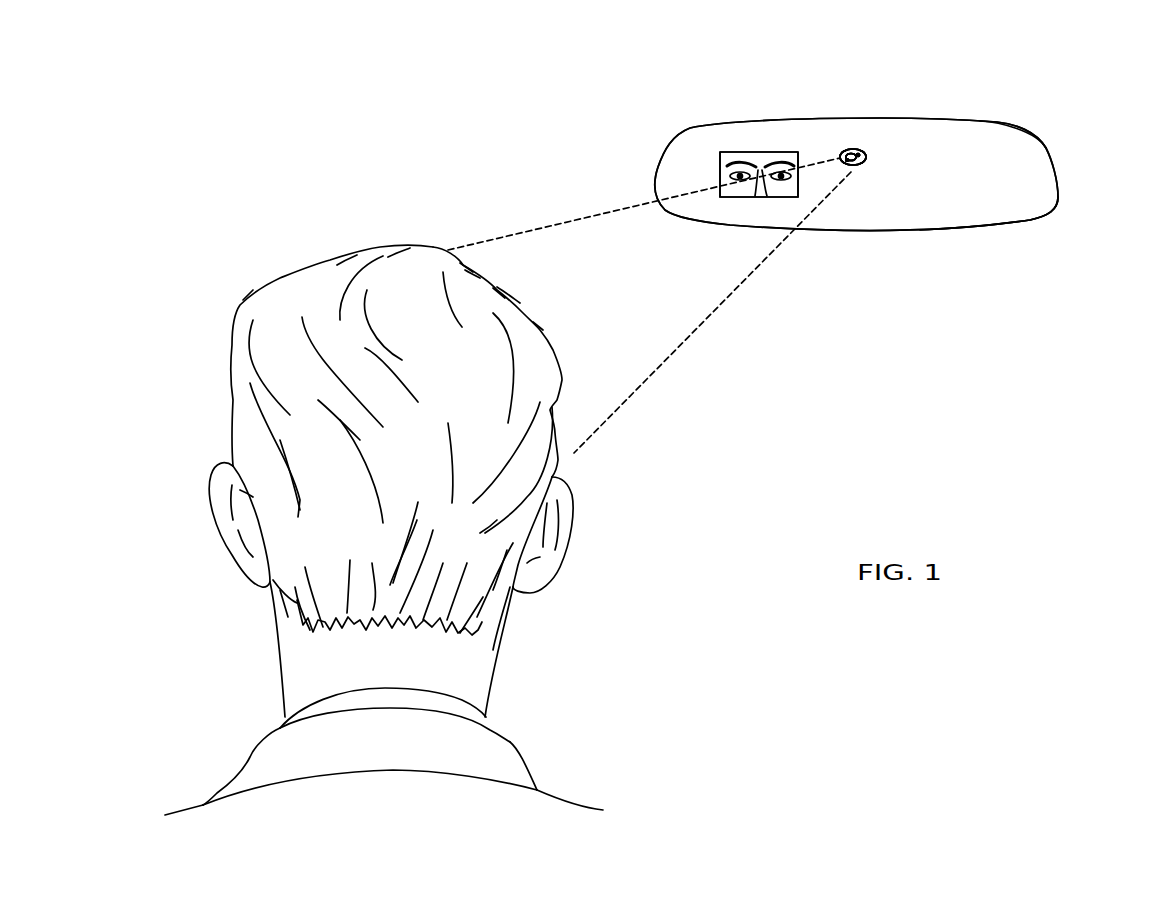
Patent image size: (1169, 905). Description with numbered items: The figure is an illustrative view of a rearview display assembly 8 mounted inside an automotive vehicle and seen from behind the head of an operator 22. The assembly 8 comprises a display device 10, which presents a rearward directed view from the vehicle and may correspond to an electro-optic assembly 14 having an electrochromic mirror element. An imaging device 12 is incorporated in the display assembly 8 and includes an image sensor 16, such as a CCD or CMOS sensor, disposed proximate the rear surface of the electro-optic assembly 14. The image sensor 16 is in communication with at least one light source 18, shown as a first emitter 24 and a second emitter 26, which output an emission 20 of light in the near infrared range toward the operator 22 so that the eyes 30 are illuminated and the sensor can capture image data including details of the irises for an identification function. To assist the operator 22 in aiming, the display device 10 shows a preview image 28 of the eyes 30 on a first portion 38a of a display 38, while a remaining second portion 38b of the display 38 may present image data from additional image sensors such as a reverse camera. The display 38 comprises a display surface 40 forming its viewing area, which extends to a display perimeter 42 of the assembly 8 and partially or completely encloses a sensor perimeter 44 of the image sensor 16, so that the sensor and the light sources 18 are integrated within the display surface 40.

The rearview display assembly 8 is at (866, 153).
The display device 10 is at (856, 143).
The electro-optic assembly 14 is at (773, 128).
The imaging device 12 is at (873, 128).
The image sensor 16 is at (866, 158).
The light source 18 is at (872, 213).
The emission 20 is at (536, 232).
The operator 22 is at (323, 268).
The first emitter 24 is at (839, 165).
The second emitter 26 is at (851, 165).
The preview image 28 is at (710, 155).
The eyes 30 is at (727, 178).
The display 38 is at (896, 174).
The display surface 40 is at (1023, 163).
The first portion 38a is at (756, 152).
The second portion 38b is at (1035, 203).
The display perimeter 42 is at (997, 122).
The sensor perimeter 44 is at (863, 152).